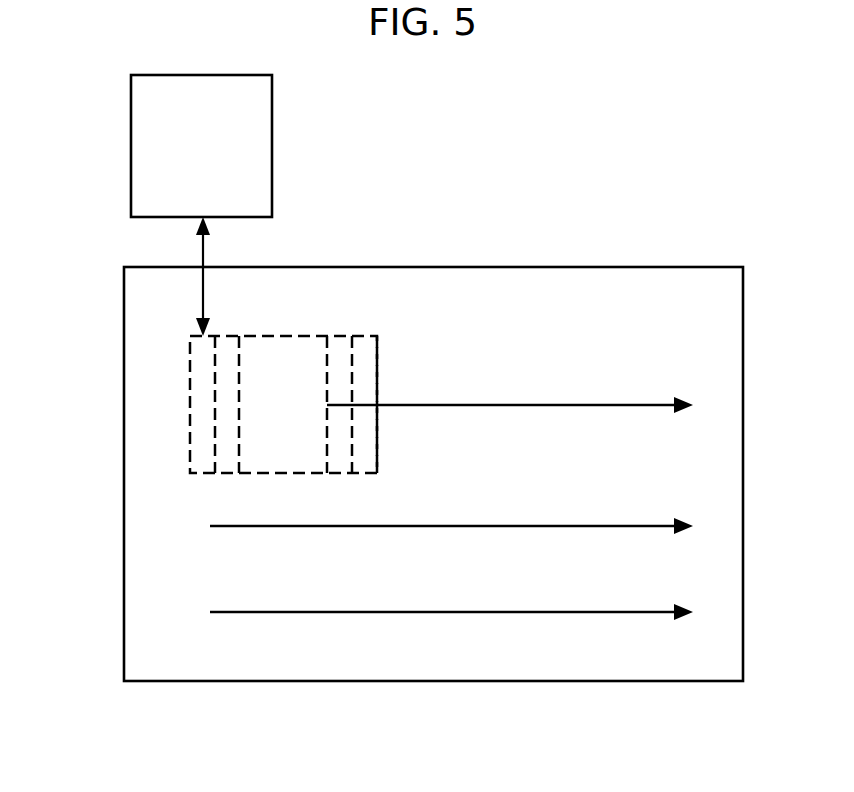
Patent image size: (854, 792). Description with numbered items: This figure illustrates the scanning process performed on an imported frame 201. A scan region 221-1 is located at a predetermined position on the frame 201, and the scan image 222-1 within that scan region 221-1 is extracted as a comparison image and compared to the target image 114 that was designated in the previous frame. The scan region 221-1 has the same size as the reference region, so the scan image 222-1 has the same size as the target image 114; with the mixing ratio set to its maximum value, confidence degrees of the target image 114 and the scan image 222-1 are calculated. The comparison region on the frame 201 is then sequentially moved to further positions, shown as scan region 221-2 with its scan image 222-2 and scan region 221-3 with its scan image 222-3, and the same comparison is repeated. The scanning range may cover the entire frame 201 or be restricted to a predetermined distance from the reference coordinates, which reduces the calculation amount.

The target image 114 is at (131, 143).
The frame 201 is at (435, 682).
The scan image 222-1 is at (190, 343).
The scan region 221-1 is at (190, 378).
The scan region 221-2 is at (214, 407).
The scan image 222-2 is at (214, 437).
The scan region 221-3 is at (237, 459).
The scan image 222-3 is at (215, 462).